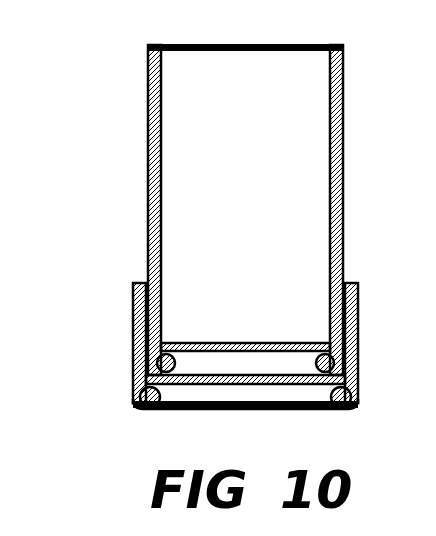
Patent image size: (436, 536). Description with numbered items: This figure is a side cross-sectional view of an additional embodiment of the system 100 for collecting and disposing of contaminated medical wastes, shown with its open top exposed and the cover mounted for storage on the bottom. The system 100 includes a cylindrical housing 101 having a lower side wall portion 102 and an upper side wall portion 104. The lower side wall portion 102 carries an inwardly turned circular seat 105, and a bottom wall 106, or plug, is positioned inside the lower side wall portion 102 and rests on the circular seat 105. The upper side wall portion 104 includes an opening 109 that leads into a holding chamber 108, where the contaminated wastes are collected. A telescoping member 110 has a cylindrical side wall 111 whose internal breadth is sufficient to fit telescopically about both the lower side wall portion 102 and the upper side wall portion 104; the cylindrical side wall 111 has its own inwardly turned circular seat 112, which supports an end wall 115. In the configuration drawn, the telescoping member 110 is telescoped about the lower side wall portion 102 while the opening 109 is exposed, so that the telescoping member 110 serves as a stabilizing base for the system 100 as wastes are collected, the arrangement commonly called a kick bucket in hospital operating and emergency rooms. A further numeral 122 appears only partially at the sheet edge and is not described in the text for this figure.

The system for collecting and disposing of contaminated wastes 100 is at (128, 222).
The cylindrical housing 101 is at (148, 258).
The lower side wall portion 102 is at (133, 344).
The upper side wall portion 104 is at (148, 93).
The circular seat 105 is at (133, 355).
The bottom wall 106 is at (278, 343).
The holding chamber 108 is at (148, 52).
The opening 109 is at (250, 45).
The telescoping member 110 is at (358, 335).
The cylindrical side wall 111 is at (370, 295).
The circular seat 112 is at (160, 406).
The end wall 115 is at (267, 386).
The element 122 is at (372, 533).